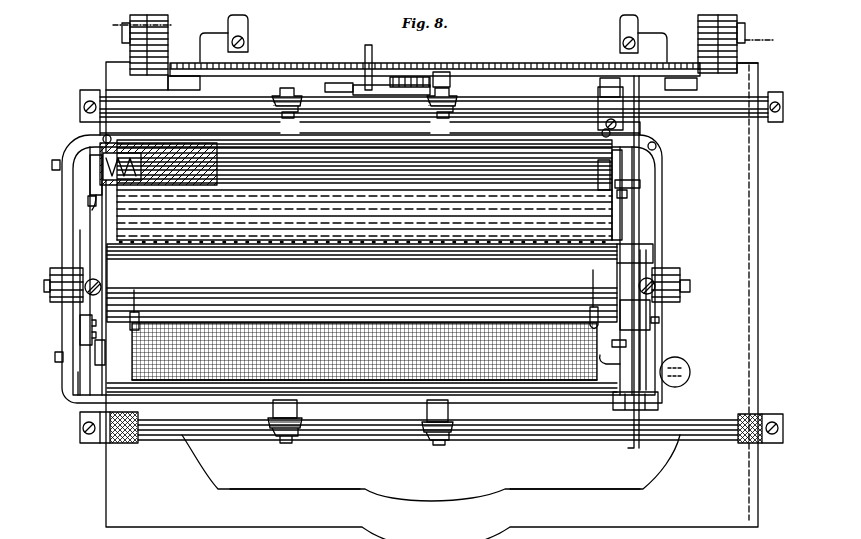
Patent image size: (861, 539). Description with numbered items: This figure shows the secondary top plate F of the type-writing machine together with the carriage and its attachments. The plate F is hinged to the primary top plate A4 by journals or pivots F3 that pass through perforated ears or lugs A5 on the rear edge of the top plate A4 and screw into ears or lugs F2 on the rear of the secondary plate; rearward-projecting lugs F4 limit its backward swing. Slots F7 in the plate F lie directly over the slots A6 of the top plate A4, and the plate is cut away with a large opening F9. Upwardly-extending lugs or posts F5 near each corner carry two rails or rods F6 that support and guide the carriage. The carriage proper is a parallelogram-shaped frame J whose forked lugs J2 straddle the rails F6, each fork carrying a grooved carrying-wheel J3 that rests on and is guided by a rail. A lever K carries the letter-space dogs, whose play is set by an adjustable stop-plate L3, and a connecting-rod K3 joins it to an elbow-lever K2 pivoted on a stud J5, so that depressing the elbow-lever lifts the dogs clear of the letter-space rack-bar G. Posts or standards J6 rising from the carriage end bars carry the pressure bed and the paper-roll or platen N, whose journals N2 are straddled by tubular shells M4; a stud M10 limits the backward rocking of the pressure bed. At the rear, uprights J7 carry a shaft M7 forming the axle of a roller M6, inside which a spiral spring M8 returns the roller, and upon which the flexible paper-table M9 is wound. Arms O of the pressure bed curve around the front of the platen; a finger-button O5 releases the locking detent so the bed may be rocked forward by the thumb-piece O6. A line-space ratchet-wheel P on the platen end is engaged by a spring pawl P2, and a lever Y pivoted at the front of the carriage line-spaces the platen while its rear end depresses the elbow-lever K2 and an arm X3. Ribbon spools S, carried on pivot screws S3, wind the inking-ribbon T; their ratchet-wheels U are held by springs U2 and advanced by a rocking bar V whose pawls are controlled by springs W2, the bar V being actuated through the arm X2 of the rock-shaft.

The secondary top plate F is at (432, 300).
The ears or lugs F2 is at (433, 43).
The journals or pivots F3 is at (438, 30).
The lugs F4 is at (248, 24).
The lugs or posts F5 is at (80, 97).
The rails or rods F6 is at (434, 265).
The openings or slots F7 is at (432, 84).
The large opening F9 is at (435, 474).
The top plate A4 is at (444, 68).
The ears or lugs A5 is at (124, 38).
The openings or slots A6 is at (431, 47).
The letter-space rack-bar G is at (435, 65).
The lever K is at (402, 83).
The elbow-lever K2 is at (630, 89).
The connecting-rod K3 is at (491, 78).
The adjustable stop-plate L3 is at (332, 83).
The carriage frame J is at (356, 262).
The lugs J2 is at (360, 409).
The grooved carrying-wheel J3 is at (286, 92).
The lug or stud J5 is at (610, 108).
The post or standard J6 is at (363, 280).
The uprights or standards J7 is at (351, 184).
The lever Y is at (628, 451).
The tubular extensions or shells M4 is at (101, 287).
The roller M6 is at (369, 190).
The rod or shaft M7 is at (640, 183).
The spiral spring M8 is at (158, 165).
The flexible apron or paper-table M9 is at (364, 216).
The stud M10 is at (655, 323).
The paper-roll or platen N is at (362, 318).
The journals N2 is at (673, 287).
The arms O is at (146, 305).
The finger-button O5 is at (680, 372).
The lever or thumb-piece O6 is at (598, 355).
The line-space ratchet-wheel P is at (623, 288).
The spring-arm or pawl P2 is at (617, 341).
The ribbon spools or rollers S is at (364, 364).
The pivot screws or bearings S3 is at (50, 258).
The inking-ribbon T is at (364, 351).
The ratchet-wheel U is at (101, 352).
The springs U2 is at (78, 378).
The rocking bar or lever V is at (80, 245).
The curved or bent spring W2 is at (80, 322).
The forwardly-extending arm X2 is at (88, 204).
The arm X3 is at (640, 190).